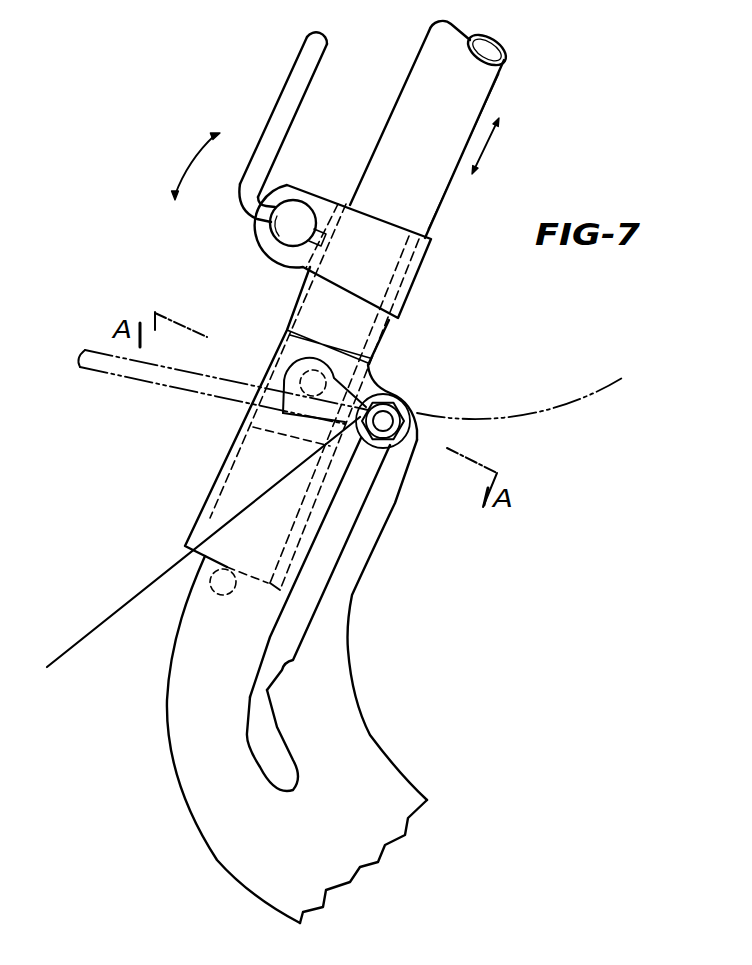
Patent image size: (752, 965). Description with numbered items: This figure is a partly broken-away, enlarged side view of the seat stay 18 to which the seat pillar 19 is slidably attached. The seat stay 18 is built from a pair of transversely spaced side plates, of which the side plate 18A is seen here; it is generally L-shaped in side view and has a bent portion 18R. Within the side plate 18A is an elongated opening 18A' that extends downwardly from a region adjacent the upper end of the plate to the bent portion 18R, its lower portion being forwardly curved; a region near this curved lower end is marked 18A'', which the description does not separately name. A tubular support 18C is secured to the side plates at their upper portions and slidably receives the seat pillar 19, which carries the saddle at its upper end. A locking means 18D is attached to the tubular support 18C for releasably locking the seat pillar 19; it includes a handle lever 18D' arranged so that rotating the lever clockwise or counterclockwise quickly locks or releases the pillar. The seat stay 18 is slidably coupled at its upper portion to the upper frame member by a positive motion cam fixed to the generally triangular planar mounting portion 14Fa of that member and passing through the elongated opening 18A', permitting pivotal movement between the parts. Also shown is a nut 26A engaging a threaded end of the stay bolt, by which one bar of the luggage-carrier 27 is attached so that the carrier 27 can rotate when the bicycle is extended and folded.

The seat pillar 19 is at (375, 152).
The handle lever 18D' is at (250, 127).
The locking means 18D is at (250, 387).
The luggage-carrier 27 is at (245, 392).
The nut 26A is at (398, 405).
The tubular support 18C is at (237, 435).
The mounting portion 14Fa is at (171, 568).
The seat stay 18 is at (368, 603).
The bent portion 18R is at (355, 690).
The side plate 18A is at (233, 739).
The elongated opening 18A' is at (370, 567).
The hook arm tip 18A'' is at (315, 767).